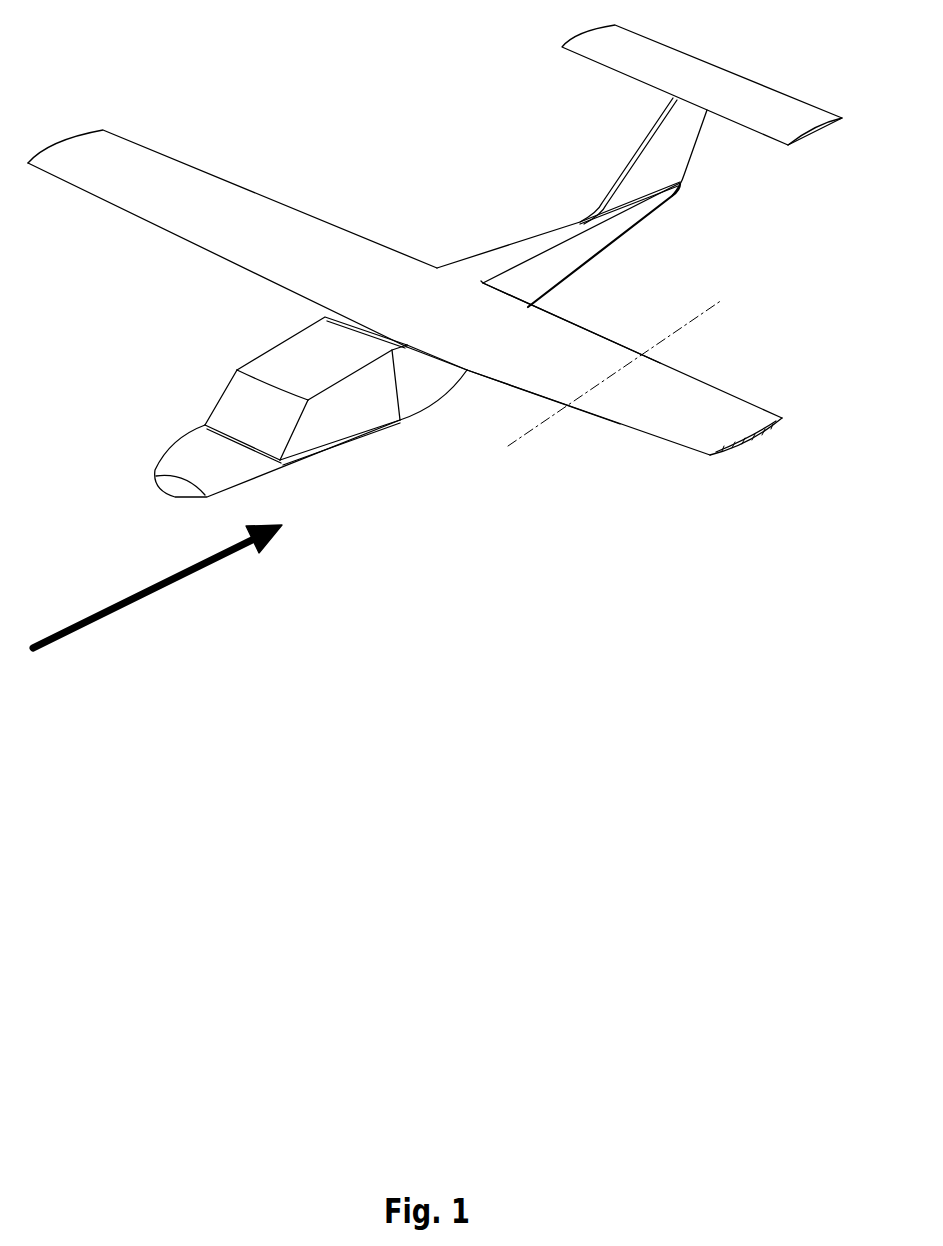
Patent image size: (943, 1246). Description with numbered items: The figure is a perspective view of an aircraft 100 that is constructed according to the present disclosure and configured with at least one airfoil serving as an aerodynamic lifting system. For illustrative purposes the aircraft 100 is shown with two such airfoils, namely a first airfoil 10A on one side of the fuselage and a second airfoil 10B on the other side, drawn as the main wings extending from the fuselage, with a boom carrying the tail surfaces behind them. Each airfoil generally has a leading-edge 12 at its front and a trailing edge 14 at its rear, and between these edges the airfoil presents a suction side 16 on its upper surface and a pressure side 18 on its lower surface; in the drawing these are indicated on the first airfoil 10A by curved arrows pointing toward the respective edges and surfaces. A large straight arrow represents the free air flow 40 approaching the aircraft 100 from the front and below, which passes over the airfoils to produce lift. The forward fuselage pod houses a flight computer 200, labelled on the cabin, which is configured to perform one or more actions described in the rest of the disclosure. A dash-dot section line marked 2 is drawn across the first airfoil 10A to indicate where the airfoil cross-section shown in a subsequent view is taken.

The aircraft 100 is at (435, 293).
The first airfoil 10A is at (600, 421).
The second airfoil 10B is at (247, 208).
The leading-edge 12 is at (617, 422).
The trailing edge 14 is at (657, 362).
The suction side 16 is at (552, 352).
The pressure side 18 is at (520, 391).
The flight computer 200 is at (202, 360).
The free air flow 40 is at (113, 615).
The section line 2 is at (615, 381).